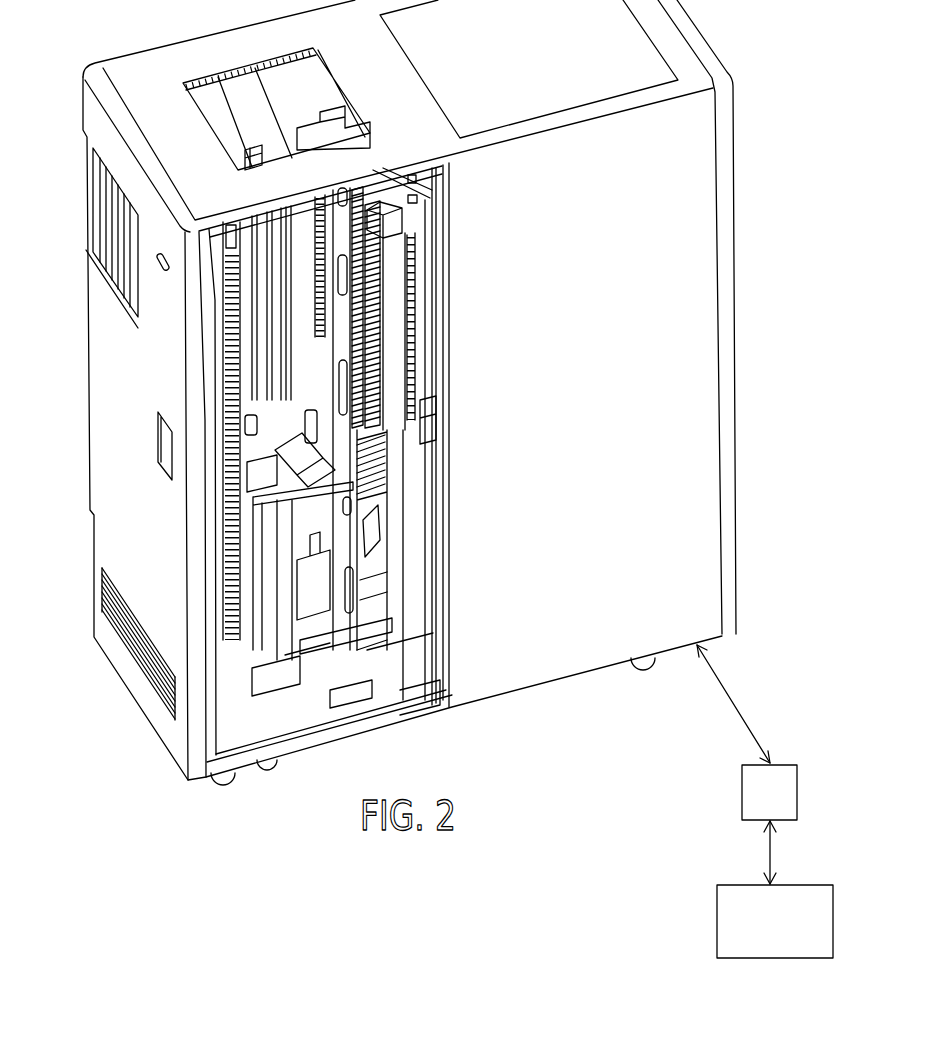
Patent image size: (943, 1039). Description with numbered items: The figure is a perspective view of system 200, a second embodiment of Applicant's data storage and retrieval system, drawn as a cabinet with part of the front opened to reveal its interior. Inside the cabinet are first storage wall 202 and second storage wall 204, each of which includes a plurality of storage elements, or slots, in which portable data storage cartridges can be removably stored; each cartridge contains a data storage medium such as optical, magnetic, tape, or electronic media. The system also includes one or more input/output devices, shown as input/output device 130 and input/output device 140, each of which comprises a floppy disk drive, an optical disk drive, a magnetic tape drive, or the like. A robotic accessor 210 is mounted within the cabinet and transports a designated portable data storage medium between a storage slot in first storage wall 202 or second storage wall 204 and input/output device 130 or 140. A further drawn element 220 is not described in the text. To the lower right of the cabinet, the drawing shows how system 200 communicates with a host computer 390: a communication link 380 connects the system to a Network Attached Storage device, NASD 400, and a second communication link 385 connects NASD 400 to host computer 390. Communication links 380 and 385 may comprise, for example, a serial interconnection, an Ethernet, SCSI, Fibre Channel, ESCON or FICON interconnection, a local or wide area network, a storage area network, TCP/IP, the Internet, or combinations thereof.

The system 200 is at (588, 673).
The first storage wall 202 is at (393, 270).
The second storage wall 204 is at (220, 343).
The robotic accessor 210 is at (240, 483).
The storage column 220 is at (420, 407).
The input/output device 130 is at (393, 488).
The input/output device 140 is at (393, 525).
The communication link 380 is at (737, 692).
The communication link 385 is at (777, 848).
The NASD 400 is at (788, 801).
The host computer 390 is at (787, 933).